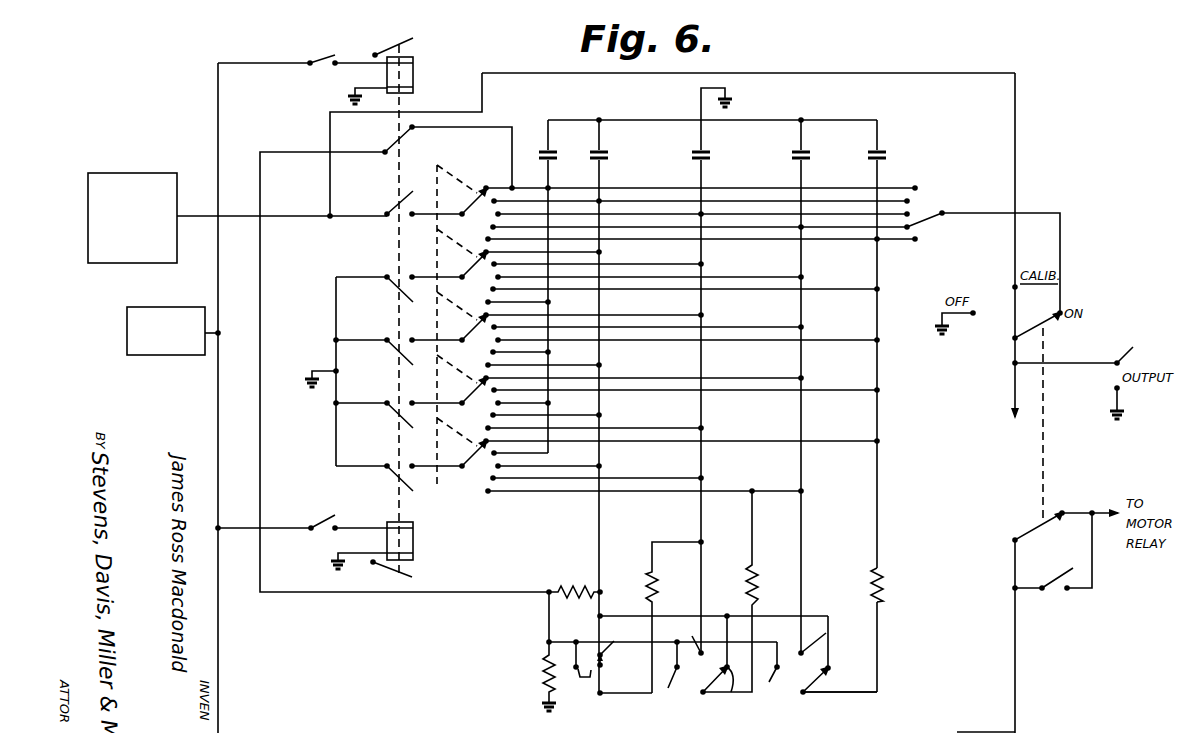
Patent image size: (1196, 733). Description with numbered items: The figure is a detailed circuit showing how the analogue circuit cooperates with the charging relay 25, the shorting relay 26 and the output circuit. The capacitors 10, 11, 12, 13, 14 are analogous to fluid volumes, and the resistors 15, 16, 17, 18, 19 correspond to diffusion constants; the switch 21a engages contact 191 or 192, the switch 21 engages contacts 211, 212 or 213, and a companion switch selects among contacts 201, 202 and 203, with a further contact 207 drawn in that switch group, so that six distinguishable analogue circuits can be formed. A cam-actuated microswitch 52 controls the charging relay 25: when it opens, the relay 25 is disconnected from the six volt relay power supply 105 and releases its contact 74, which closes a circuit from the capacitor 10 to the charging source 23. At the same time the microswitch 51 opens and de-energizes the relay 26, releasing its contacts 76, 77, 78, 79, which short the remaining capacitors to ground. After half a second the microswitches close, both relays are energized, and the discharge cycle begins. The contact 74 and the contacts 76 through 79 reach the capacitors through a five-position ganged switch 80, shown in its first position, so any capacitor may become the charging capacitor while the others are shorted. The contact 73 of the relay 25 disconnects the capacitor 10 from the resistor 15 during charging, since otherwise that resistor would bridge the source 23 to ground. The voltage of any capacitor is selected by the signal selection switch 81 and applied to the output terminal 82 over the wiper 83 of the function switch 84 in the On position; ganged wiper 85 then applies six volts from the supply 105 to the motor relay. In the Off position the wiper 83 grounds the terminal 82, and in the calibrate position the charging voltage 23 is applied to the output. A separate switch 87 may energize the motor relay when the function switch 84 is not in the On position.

The capacitor 10 is at (552, 149).
The capacitor 11 is at (605, 149).
The capacitor 12 is at (707, 153).
The capacitor 13 is at (807, 153).
The capacitor 14 is at (884, 153).
The resistor 15 is at (573, 583).
The resistor 16 is at (659, 578).
The resistor 17 is at (757, 581).
The resistor 18 is at (884, 588).
The resistor 19 is at (544, 667).
The switch 21 is at (815, 687).
The switch 21a is at (603, 674).
The charging source 23 is at (146, 172).
The charging relay 25 is at (414, 79).
The shorting relay 26 is at (414, 541).
The microswitch 51 is at (328, 515).
The microswitch 52 is at (318, 58).
The contact 73 is at (413, 132).
The contact 74 is at (398, 199).
The contact 76 is at (396, 481).
The contact 77 is at (397, 418).
The contact 78 is at (395, 354).
The contact 79 is at (396, 291).
The ganged switch 80 is at (436, 258).
The signal selection switch 81 is at (926, 212).
The output terminal 82 is at (1124, 360).
The wiper 83 is at (1045, 325).
The function switch 84 is at (1048, 448).
The additional wiper 85 is at (1044, 524).
The separate switch 87 is at (1058, 589).
The 6 volt relay power supply 105 is at (175, 307).
The contact 191 is at (575, 666).
The contact 192 is at (609, 650).
The contact 201 is at (669, 675).
The contact 202 is at (699, 651).
The contact 203 is at (735, 690).
The switch contact 207 is at (723, 669).
The contact 211 is at (774, 672).
The contact 212 is at (816, 645).
The contact 213 is at (831, 667).